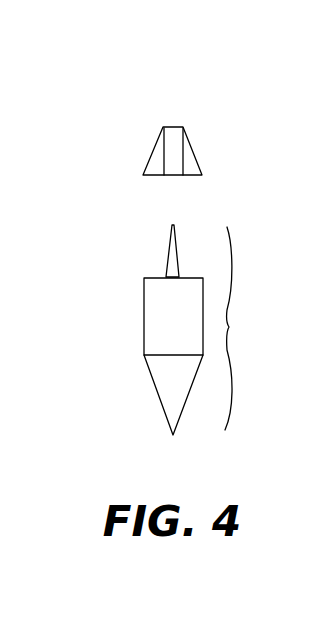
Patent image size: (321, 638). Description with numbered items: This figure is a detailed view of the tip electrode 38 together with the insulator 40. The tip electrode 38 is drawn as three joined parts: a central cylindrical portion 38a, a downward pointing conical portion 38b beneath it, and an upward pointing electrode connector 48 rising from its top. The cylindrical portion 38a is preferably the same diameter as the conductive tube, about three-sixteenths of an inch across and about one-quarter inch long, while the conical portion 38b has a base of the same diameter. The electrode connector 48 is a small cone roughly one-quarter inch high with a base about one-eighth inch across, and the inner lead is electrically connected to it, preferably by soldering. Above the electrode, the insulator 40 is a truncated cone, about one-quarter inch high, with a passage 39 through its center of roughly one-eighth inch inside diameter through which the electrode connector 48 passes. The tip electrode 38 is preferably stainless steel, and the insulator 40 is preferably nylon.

The tip electrode 38 is at (229, 327).
The central cylindrical portion 38a is at (158, 328).
The downward pointing conical portion 38b is at (170, 407).
The passage 39 is at (168, 138).
The insulator 40 is at (154, 162).
The electrode connector 48 is at (171, 259).